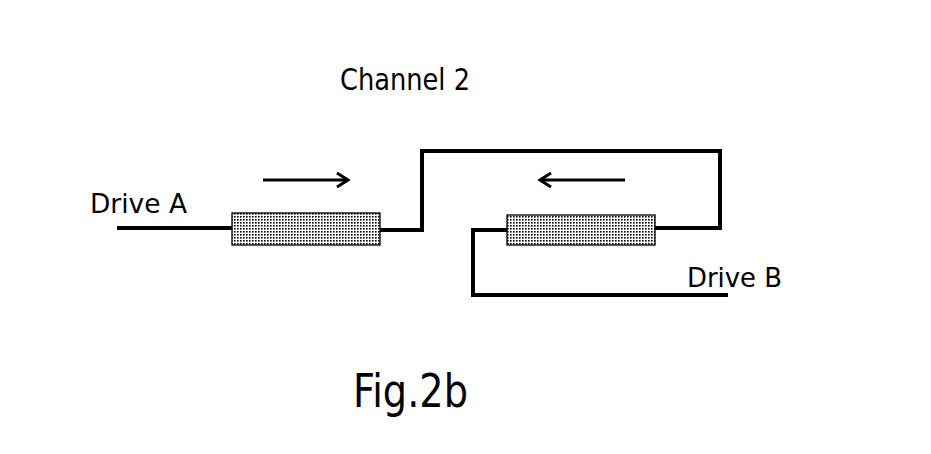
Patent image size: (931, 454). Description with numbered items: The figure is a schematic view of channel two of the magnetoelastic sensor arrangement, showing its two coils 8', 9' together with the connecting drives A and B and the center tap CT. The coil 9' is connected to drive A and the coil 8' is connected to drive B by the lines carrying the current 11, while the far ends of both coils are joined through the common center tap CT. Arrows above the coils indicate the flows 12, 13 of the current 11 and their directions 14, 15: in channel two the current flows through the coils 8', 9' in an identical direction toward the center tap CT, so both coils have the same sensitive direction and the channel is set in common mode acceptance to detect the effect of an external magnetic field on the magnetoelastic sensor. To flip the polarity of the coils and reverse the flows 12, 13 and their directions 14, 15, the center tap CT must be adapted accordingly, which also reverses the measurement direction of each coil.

The current 11 is at (158, 232).
The center tap CT is at (538, 150).
The coil 9' is at (306, 301).
The coil 8' is at (581, 310).
The flow of the current 12 is at (278, 124).
The direction of the flow of the current 14 is at (305, 177).
The flow of the current 13 is at (602, 124).
The direction of the flow of the current 15 is at (582, 178).